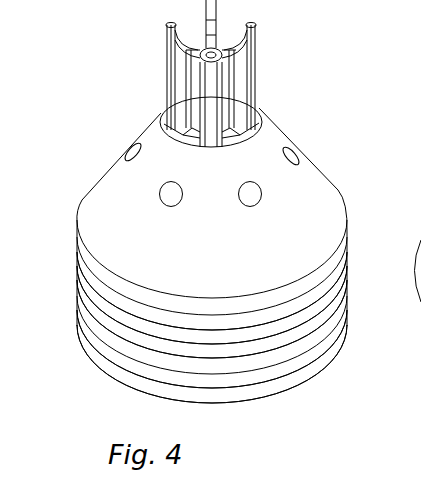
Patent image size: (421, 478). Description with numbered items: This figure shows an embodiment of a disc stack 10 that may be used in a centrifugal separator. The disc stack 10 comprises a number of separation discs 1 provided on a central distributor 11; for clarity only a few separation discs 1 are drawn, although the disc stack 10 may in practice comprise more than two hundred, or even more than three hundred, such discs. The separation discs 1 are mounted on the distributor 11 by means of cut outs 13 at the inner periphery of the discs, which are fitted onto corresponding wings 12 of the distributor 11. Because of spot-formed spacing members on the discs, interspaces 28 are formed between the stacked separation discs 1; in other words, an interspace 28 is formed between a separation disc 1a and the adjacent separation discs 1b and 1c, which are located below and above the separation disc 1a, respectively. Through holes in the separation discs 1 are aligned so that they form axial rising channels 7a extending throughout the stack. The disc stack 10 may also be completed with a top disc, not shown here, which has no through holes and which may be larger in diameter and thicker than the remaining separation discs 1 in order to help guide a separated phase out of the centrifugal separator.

The disc stack 10 is at (108, 96).
The separation discs 1 is at (97, 184).
The wings 12 is at (192, 73).
The distributor 11 is at (222, 95).
The cut outs 13 is at (240, 128).
The axial rising channels 7a is at (258, 197).
The separation disc 1c is at (93, 300).
The separation disc 1a is at (95, 318).
The separation disc 1b is at (95, 337).
The interspaces 28 is at (318, 320).